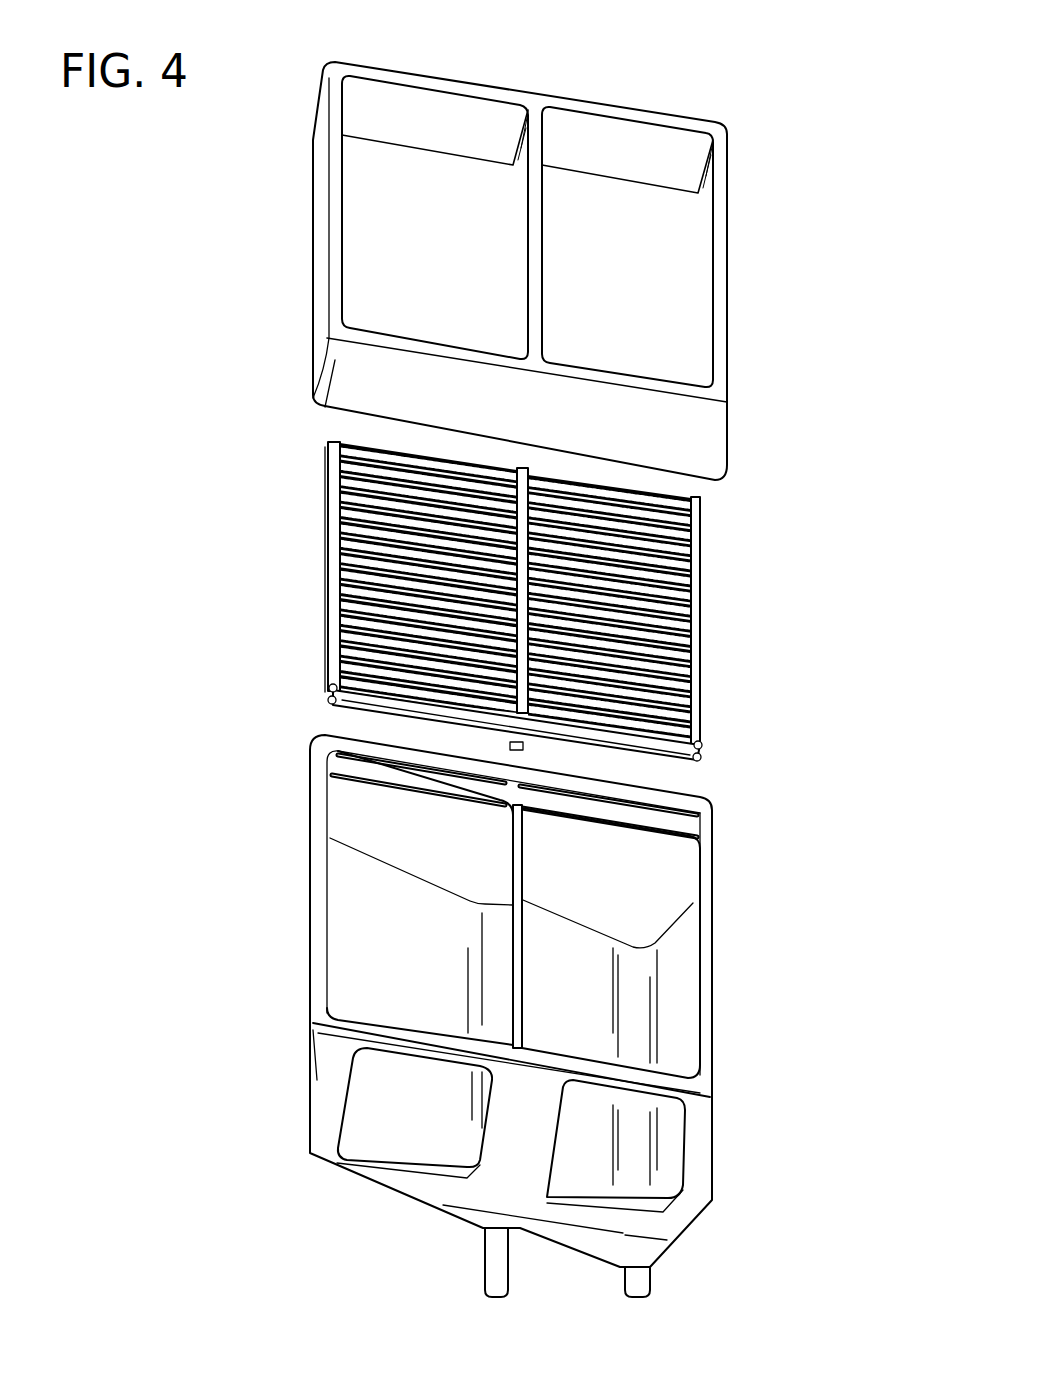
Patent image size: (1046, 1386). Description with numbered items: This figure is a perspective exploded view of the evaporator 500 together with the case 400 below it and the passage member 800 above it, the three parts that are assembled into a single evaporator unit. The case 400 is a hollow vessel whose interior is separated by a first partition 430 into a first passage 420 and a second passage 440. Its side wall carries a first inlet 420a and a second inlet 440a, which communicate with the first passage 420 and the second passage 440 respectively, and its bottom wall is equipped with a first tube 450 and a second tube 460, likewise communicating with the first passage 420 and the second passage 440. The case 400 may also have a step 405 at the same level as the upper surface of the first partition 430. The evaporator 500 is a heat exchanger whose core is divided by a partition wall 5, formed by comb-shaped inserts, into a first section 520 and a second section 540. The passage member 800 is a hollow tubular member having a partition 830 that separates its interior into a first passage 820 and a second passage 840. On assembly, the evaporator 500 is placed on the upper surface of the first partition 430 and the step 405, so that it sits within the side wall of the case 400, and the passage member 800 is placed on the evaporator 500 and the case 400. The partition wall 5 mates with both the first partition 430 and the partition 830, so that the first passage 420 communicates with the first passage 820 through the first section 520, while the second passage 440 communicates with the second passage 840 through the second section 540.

The passage member 800 is at (745, 153).
The first passage 820 is at (383, 316).
The partition 830 is at (530, 208).
The second passage 840 is at (660, 315).
The partition wall 5 is at (530, 458).
The evaporator 500 is at (541, 601).
The first section 520 is at (318, 655).
The second section 540 is at (715, 691).
The case 400 is at (536, 1016).
The step 405 is at (703, 835).
The first passage 420 is at (380, 973).
The first partition 430 is at (513, 867).
The second passage 440 is at (662, 972).
The first inlet 420a is at (380, 1125).
The second inlet 440a is at (662, 1127).
The first tube 450 is at (483, 1260).
The second tube 460 is at (650, 1280).